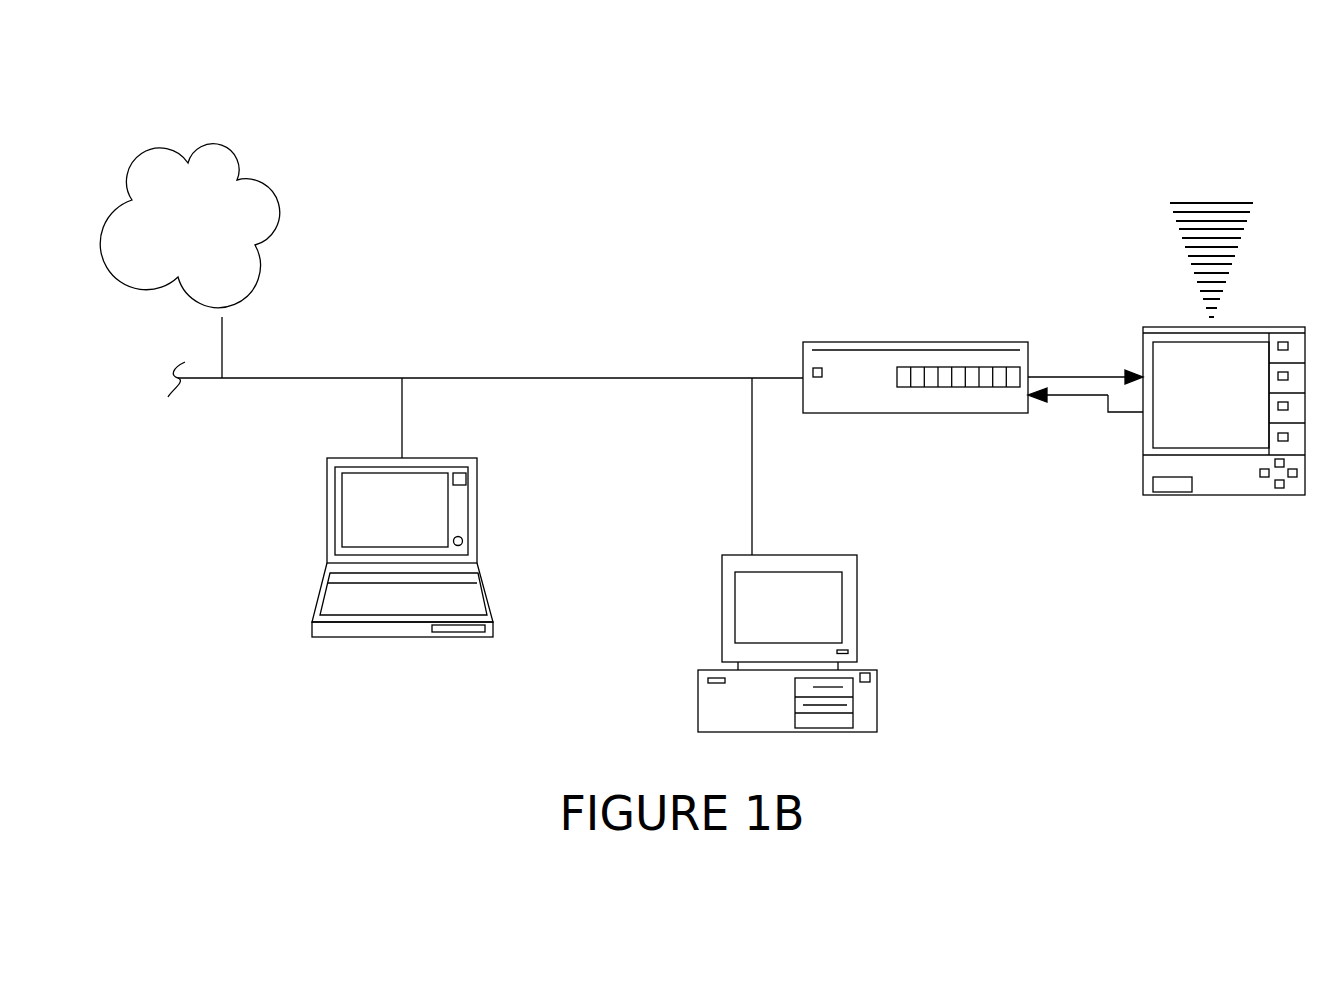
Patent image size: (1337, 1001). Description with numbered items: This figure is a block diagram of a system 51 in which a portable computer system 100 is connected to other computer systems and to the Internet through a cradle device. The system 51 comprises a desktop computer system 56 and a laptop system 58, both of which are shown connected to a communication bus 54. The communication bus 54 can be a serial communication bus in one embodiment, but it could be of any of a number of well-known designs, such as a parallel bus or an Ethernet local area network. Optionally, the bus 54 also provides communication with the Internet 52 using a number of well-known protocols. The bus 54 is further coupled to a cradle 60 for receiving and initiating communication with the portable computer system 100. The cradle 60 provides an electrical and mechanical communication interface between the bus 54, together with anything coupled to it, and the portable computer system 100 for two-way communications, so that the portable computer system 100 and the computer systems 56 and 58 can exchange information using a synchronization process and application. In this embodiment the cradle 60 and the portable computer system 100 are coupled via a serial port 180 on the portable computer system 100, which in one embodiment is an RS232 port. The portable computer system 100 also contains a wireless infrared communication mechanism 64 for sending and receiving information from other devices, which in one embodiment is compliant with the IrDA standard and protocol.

The system 51 is at (86, 37).
The Internet 52 is at (282, 180).
The communication bus 54 is at (510, 378).
The desktop computer system 56 is at (857, 578).
The laptop system 58 is at (445, 458).
The cradle 60 is at (947, 342).
The wireless infrared communication mechanism 64 is at (1170, 243).
The portable computer system 100 is at (1270, 327).
The serial port 180 is at (1118, 338).